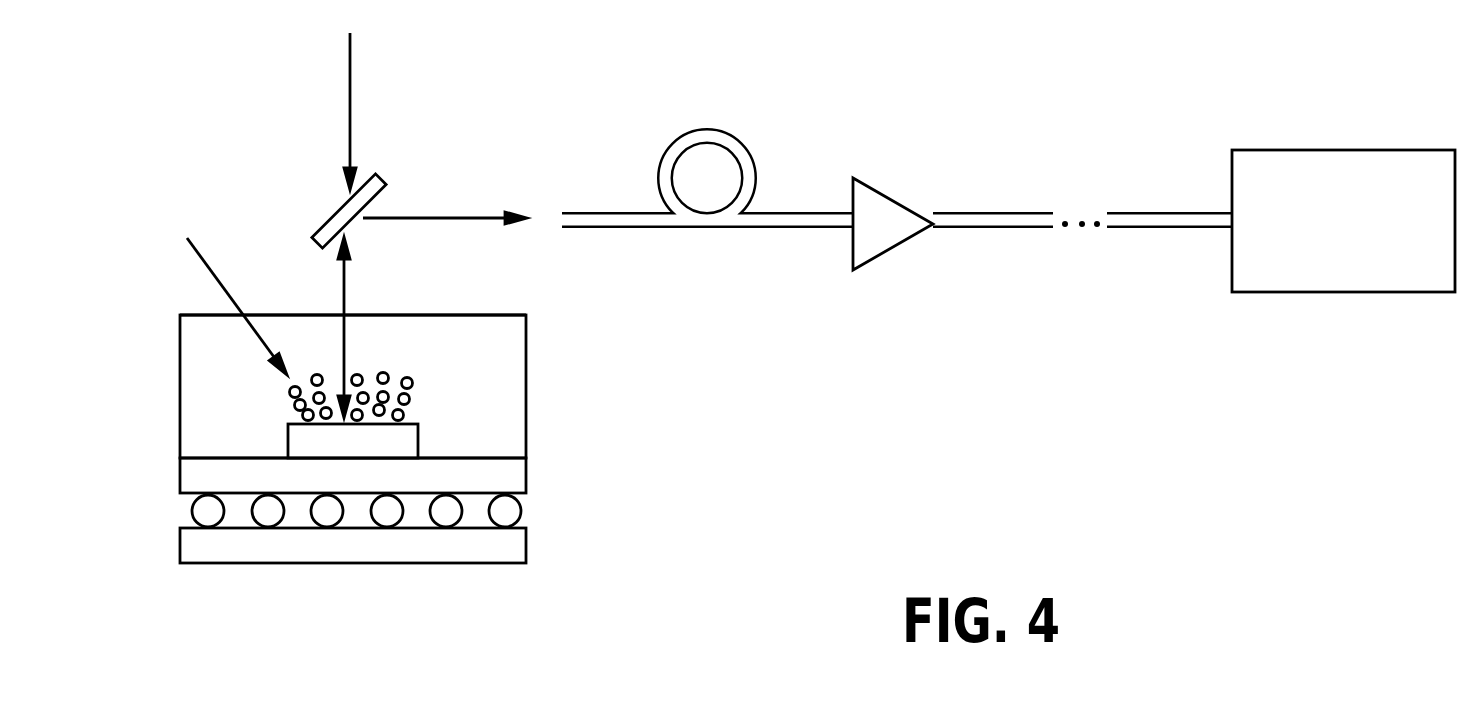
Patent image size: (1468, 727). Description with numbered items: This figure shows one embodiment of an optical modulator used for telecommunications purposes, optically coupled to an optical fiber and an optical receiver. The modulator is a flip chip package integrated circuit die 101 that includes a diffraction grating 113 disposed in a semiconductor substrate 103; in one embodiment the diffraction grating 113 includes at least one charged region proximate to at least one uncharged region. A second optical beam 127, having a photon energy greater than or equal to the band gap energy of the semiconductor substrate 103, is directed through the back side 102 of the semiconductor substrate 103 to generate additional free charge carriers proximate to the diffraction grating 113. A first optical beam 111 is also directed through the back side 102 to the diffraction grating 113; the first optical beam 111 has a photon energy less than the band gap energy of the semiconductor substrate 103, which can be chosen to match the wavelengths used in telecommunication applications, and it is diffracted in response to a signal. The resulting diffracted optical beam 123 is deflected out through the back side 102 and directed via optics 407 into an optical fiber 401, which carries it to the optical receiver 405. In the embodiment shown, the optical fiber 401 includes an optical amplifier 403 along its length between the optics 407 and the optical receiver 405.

The flip chip package integrated circuit die 101 is at (565, 297).
The back side 102 is at (420, 310).
The semiconductor substrate 103 is at (513, 363).
The first optical beam 111 is at (352, 83).
The diffraction grating 113 is at (423, 438).
The diffracted optical beam 123 is at (430, 213).
The second optical beam 127 is at (210, 270).
The optical fiber 401 is at (730, 130).
The optical amplifier 403 is at (883, 252).
The optical receiver 405 is at (1365, 143).
The optics 407 is at (323, 220).